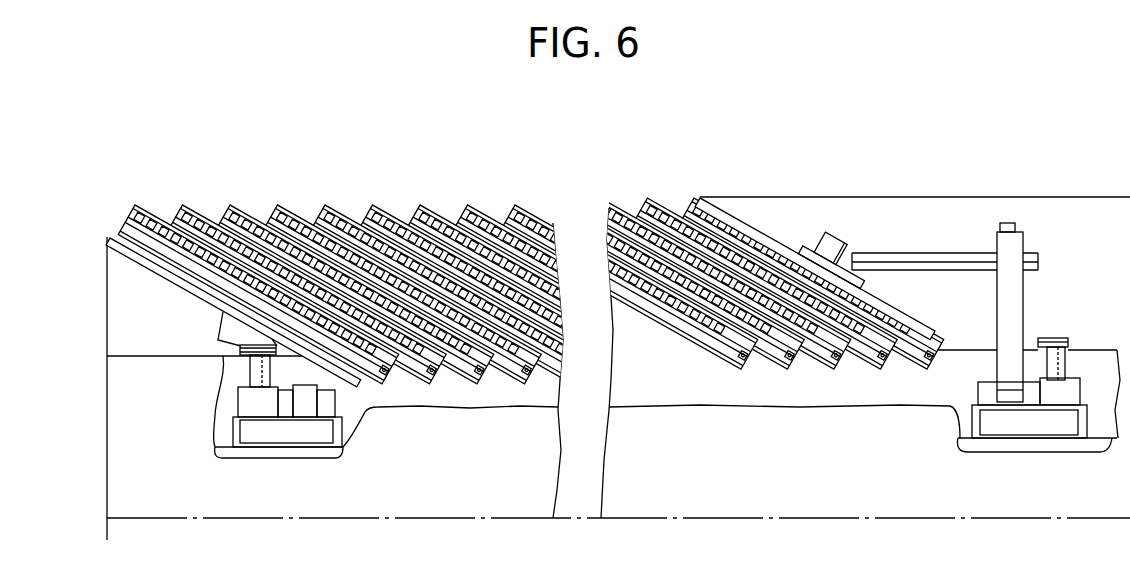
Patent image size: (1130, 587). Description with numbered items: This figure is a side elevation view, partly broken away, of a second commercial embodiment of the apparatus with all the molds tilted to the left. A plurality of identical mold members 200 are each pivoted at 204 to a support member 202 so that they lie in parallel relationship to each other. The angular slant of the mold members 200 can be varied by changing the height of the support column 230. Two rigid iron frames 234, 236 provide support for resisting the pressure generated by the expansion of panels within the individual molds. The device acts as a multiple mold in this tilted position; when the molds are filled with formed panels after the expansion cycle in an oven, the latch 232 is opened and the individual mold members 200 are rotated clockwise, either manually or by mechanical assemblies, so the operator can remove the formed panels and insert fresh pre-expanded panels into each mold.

The mold member 200 is at (188, 222).
The support member 202 is at (372, 410).
The pivot 204 is at (512, 373).
The support column 230 is at (257, 373).
The latch 232 is at (1013, 297).
The rigid iron frame 234 is at (196, 278).
The rigid iron frame 236 is at (890, 318).